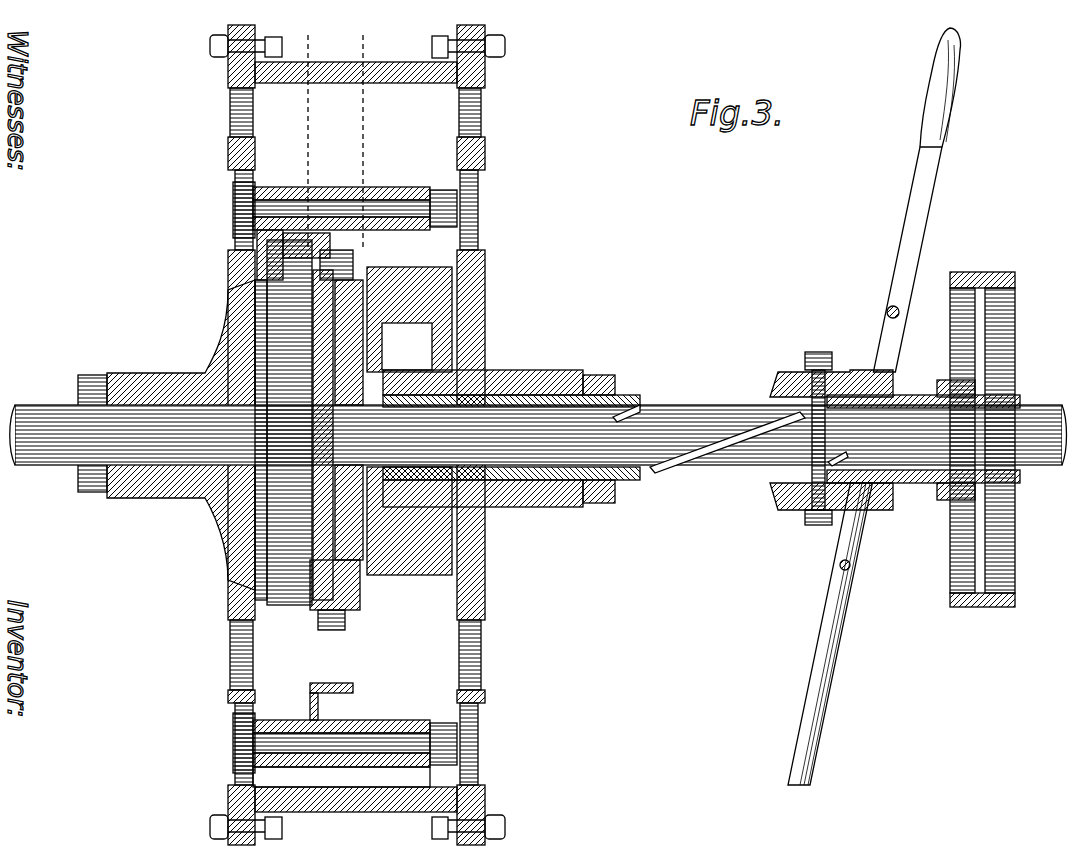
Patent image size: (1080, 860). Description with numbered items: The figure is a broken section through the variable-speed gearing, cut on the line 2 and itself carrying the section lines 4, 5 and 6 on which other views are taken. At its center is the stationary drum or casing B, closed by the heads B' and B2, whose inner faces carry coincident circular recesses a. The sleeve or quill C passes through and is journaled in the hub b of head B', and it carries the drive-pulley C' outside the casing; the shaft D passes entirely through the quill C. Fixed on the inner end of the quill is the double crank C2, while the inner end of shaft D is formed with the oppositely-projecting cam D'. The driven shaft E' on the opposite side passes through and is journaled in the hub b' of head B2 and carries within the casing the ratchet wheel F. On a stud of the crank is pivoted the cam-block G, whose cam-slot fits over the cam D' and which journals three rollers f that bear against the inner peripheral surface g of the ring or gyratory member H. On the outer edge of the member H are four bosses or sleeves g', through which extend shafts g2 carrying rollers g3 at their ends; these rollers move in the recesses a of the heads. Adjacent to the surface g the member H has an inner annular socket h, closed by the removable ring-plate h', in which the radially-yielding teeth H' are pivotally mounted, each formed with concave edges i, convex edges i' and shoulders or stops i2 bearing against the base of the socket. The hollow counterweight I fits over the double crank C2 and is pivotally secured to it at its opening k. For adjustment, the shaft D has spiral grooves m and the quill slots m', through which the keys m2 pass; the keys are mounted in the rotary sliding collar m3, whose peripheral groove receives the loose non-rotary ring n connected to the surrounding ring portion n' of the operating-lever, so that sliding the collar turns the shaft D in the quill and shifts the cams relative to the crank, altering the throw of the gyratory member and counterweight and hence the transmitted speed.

The stationary drum or casing B is at (357, 435).
The section line 4 is at (276, 50).
The section line 5 is at (321, 50).
The section line 6 is at (371, 50).
The circular recesses a is at (253, 105).
The rollers g3 is at (233, 185).
The radially-yielding teeth H' is at (205, 477).
The removable ring-plate h' is at (211, 255).
The ratchet wheel F is at (230, 295).
The hub of the head B² b' is at (111, 415).
The driving shaft E' is at (538, 414).
The section line 2 is at (177, 433).
The head of the casing B2 is at (223, 583).
The shaft D is at (1040, 395).
The cam-block G is at (350, 592).
The cam D' is at (349, 420).
The hollow counterweight I is at (427, 283).
The concave edges i is at (506, 317).
The convex edges i' is at (392, 358).
The inner annular socket h is at (293, 211).
The rollers f is at (340, 290).
The bosses or sleeves g' is at (355, 456).
The shafts g2 is at (330, 207).
The inner peripheral surface g is at (357, 667).
The ring or gyratory member H is at (364, 695).
The shoulders or stops i2 is at (293, 717).
The head of the casing B' is at (506, 590).
The double crank C2 is at (427, 350).
The hub of the head B' b is at (561, 356).
The sleeve or quill C is at (515, 443).
The spiral grooves m is at (782, 437).
The longitudinally-extending slots m' is at (703, 440).
The pins or keys m2 is at (827, 353).
The rotary sliding collar m3 is at (777, 503).
The loose non-rotary ring n is at (858, 515).
The surrounding ring portion n' is at (906, 505).
The drive-pulley C' is at (985, 417).
The opening k is at (907, 212).